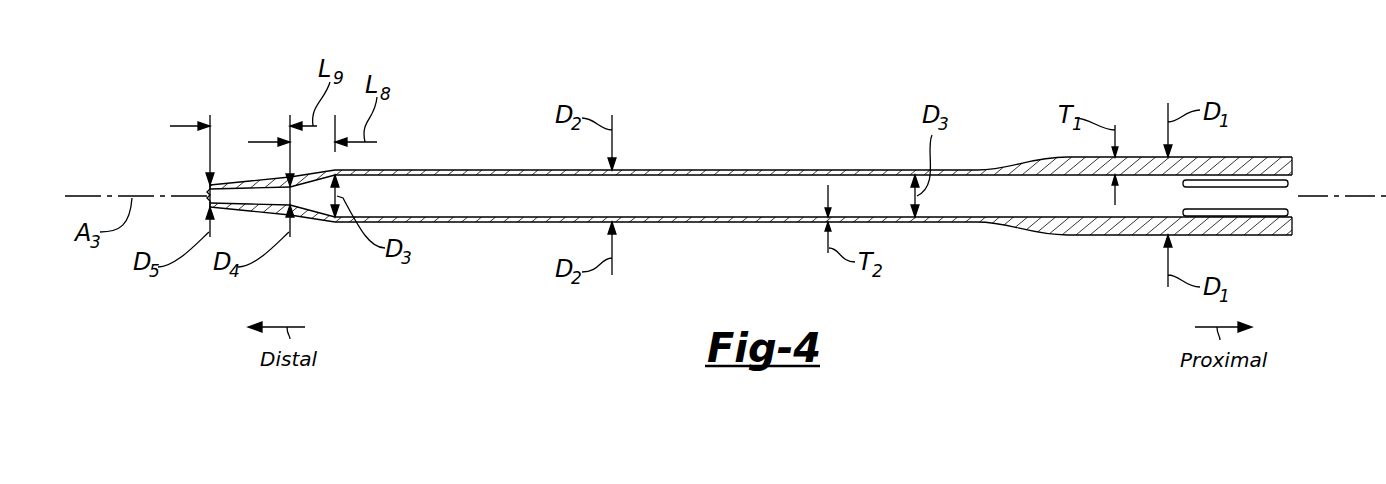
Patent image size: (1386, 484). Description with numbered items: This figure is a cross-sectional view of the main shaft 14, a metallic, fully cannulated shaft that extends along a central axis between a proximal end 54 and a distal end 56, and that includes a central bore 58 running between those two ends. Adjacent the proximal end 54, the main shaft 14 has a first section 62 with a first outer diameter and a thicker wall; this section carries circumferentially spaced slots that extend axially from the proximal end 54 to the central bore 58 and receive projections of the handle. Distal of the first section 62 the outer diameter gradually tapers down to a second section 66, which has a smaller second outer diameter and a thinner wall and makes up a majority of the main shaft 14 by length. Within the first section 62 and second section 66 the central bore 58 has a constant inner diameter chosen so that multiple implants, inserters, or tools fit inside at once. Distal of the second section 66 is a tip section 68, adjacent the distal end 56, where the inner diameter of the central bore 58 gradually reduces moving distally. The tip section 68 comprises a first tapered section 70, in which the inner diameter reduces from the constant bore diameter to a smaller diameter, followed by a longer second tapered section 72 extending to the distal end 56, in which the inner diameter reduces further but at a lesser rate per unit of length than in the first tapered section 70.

The main shaft 14 is at (824, 87).
The proximal end 54 is at (1292, 165).
The distal end 56 is at (208, 202).
The central bore 58 is at (733, 207).
The first section 62 is at (1137, 133).
The second section 66 is at (694, 165).
The tip section 68 is at (314, 226).
The first tapered section 70 is at (307, 109).
The second tapered section 72 is at (250, 112).